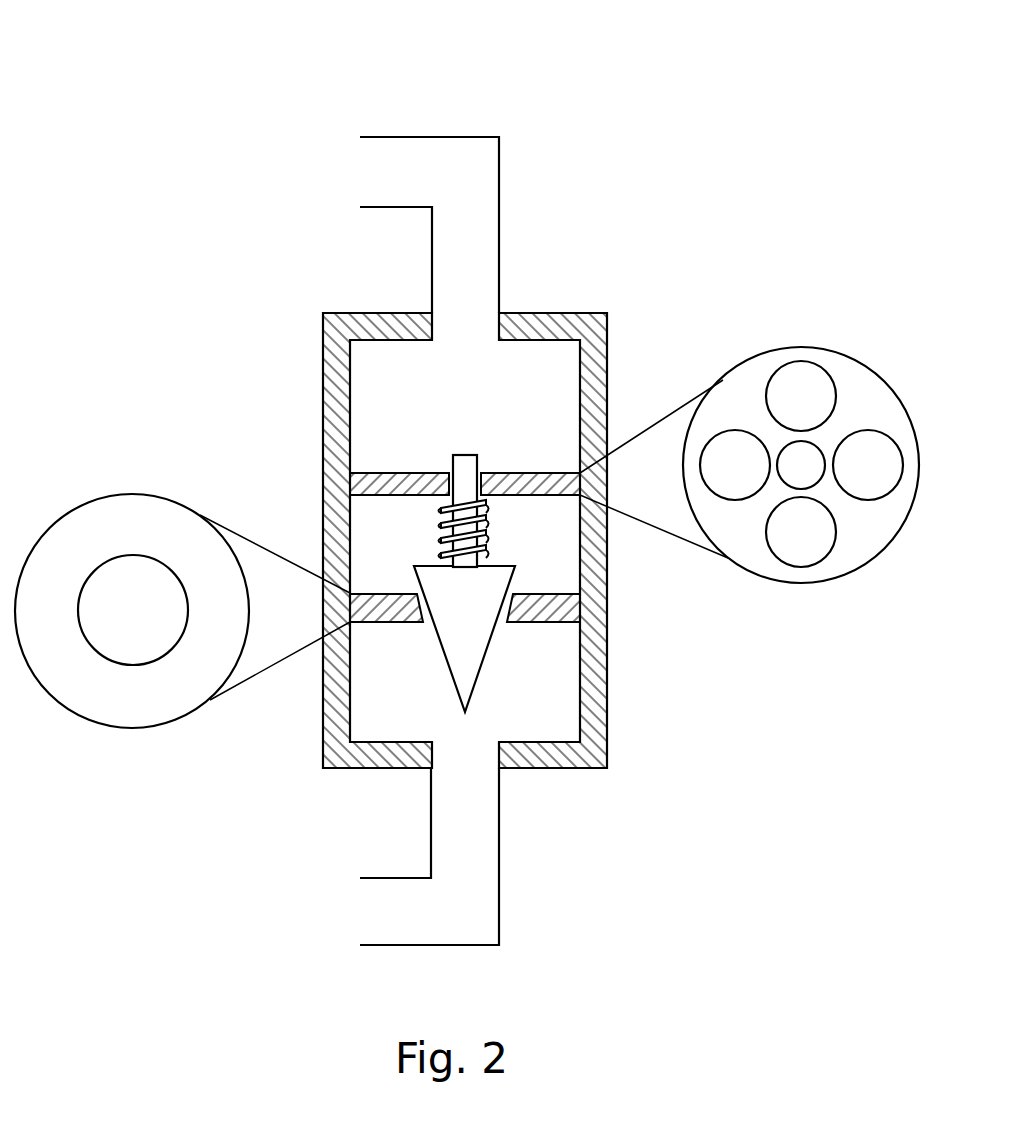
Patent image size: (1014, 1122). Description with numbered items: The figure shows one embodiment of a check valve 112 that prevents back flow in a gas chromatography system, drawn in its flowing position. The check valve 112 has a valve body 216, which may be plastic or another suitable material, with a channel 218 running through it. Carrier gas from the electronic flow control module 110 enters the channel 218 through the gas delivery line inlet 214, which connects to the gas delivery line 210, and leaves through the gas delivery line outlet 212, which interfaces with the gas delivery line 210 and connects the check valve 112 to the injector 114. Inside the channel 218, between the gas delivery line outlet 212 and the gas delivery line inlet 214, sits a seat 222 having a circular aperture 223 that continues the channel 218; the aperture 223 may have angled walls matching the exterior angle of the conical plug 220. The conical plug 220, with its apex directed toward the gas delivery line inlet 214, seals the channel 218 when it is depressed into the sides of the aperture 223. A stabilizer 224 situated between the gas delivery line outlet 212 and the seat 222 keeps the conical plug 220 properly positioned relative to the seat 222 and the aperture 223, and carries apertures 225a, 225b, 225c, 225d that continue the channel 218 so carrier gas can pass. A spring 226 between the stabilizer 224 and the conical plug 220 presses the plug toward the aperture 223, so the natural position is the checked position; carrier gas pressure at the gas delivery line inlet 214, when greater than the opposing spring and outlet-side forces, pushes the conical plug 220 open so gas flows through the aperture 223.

The check valve 112 is at (136, 76).
The injector 114 is at (460, 163).
The electronic flow control module 110 is at (430, 890).
The gas delivery line 210 is at (500, 233).
The gas delivery line outlet 212 is at (423, 312).
The gas delivery line inlet 214 is at (423, 772).
The valve body 216 is at (607, 655).
The channel 218 is at (572, 697).
The conical plug 220 is at (448, 668).
The seat 222 is at (297, 577).
The aperture 223 is at (141, 573).
The stabilizer 224 is at (634, 431).
The aperture 225a is at (735, 465).
The aperture 225b is at (801, 396).
The aperture 225c is at (868, 465).
The aperture 225d is at (801, 532).
The spring 226 is at (483, 522).